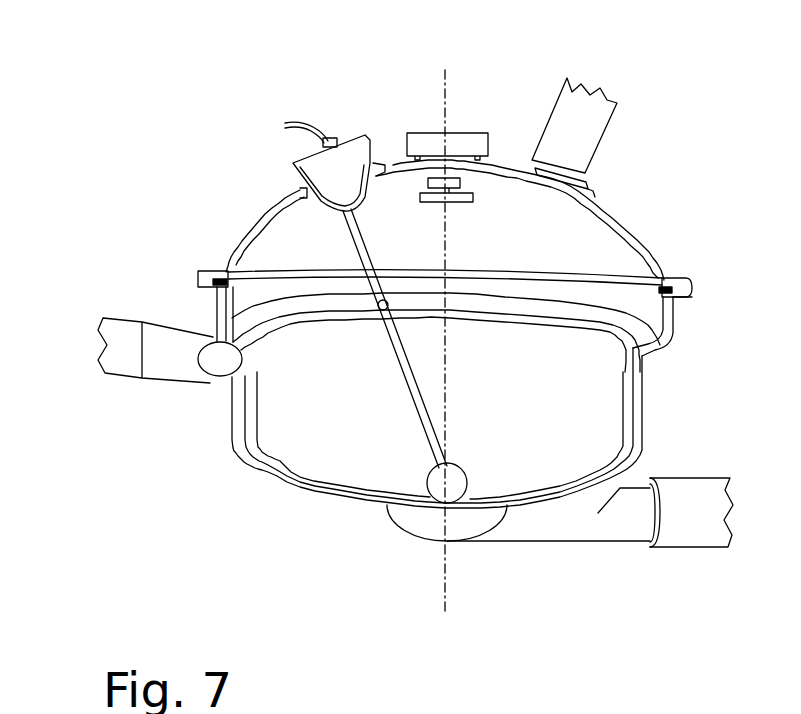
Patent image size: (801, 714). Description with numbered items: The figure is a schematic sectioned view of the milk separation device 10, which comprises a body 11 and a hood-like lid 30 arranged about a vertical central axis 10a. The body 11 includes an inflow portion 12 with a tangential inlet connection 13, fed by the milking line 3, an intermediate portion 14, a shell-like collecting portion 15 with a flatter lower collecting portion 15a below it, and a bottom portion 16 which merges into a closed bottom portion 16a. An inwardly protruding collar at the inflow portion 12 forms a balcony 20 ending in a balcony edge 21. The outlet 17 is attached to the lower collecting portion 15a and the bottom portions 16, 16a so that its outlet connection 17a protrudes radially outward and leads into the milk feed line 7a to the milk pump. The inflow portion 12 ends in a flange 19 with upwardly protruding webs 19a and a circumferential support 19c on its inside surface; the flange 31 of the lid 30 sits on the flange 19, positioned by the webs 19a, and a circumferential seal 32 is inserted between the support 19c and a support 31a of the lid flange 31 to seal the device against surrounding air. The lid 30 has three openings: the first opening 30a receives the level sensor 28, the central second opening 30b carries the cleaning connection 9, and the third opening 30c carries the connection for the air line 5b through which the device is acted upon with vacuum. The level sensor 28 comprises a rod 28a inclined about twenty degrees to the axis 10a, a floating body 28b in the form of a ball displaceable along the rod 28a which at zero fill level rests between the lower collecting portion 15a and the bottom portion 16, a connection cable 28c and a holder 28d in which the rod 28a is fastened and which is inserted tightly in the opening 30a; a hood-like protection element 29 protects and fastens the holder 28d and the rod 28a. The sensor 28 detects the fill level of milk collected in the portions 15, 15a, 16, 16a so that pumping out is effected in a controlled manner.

The milk separation device 10 is at (155, 103).
The central axis 10a is at (447, 97).
The milking line 3 is at (117, 372).
The air line 5b is at (583, 98).
The milk feed line 7a is at (698, 533).
The cleaning connection 9 is at (470, 142).
The body 11 is at (268, 469).
The inflow portion 12 is at (223, 313).
The tangential inlet connection 13 is at (198, 377).
The intermediate portion 14 is at (636, 425).
The collecting portion 15 is at (627, 463).
The lower collecting portion 15a is at (347, 497).
The bottom portion 16 is at (480, 517).
The closed bottom portion 16a is at (417, 537).
The outlet 17 is at (553, 530).
The outlet connection 17a is at (650, 523).
The flange 19 is at (200, 283).
The webs 19a is at (680, 295).
The circumferential support 19c is at (670, 298).
The balcony 20 is at (563, 310).
The balcony edge 21 is at (530, 320).
The level sensor 28 is at (341, 383).
The rod 28a is at (420, 415).
The floating body 28b is at (427, 486).
The connection cable 28c is at (322, 138).
The holder 28d is at (348, 158).
The protection element 29 is at (364, 135).
The lid 30 is at (267, 223).
The first opening 30a is at (303, 187).
The second opening 30b is at (433, 155).
The third opening 30c is at (570, 177).
The flange of the lid 31 is at (203, 272).
The support 31a is at (667, 280).
The seal 32 is at (307, 270).